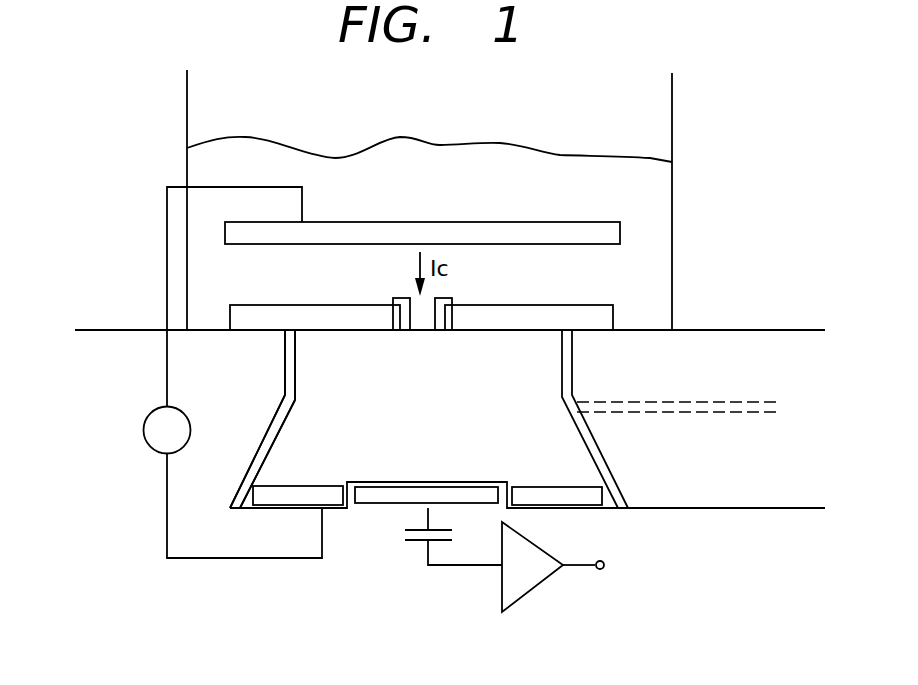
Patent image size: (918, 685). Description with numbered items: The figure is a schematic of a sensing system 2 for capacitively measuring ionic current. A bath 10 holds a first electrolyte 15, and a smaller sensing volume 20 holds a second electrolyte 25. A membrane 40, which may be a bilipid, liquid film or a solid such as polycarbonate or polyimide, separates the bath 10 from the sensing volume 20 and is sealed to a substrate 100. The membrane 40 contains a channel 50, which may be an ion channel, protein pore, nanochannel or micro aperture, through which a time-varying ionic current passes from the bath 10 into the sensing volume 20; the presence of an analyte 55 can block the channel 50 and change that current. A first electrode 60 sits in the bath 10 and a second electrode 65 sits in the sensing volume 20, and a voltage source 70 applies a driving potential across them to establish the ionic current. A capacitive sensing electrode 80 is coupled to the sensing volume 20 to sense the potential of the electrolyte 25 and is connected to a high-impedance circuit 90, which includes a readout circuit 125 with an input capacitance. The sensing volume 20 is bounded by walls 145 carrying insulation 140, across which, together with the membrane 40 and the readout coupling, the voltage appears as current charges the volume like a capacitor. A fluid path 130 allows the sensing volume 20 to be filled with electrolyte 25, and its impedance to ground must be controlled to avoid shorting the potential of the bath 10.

The sensing system 2 is at (728, 72).
The bath 10 is at (174, 147).
The first electrolyte 15 is at (652, 194).
The sensing volume 20 is at (241, 419).
The second electrolyte 25 is at (568, 462).
The membrane 40 is at (490, 305).
The channel 50 is at (433, 331).
The analyte 55 is at (413, 300).
The first electrode 60 is at (383, 228).
The second electrode 65 is at (298, 497).
The voltage source 70 is at (150, 413).
The capacitive sensing electrode 80 is at (387, 497).
The high-impedance circuit 90 is at (532, 578).
The substrate 100 is at (645, 330).
The readout circuit 125 is at (538, 585).
The fluid path 130 is at (740, 412).
The insulation 140 is at (278, 420).
The walls 145 is at (285, 356).